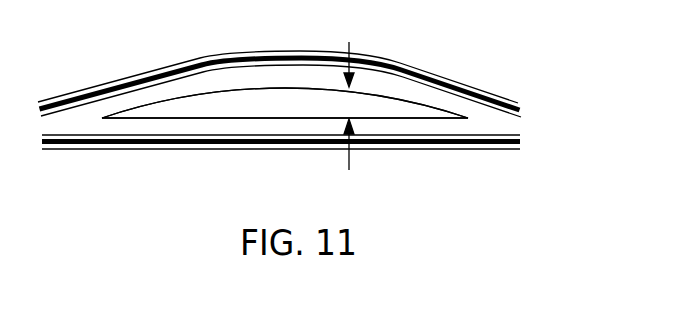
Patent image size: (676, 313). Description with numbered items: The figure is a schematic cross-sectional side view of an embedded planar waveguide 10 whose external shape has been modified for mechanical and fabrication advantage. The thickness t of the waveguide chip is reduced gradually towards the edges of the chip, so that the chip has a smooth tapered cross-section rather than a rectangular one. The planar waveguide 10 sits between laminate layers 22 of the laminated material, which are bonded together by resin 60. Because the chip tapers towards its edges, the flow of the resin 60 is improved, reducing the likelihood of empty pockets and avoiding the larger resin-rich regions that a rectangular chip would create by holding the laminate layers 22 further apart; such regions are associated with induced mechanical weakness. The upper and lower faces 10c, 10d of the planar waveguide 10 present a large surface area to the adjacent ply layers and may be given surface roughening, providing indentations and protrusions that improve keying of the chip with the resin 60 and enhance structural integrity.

The planar waveguide 10 is at (285, 111).
The lower face of the planar waveguide 10c is at (255, 120).
The upper face of the planar waveguide 10d is at (168, 94).
The laminate layers 22 is at (440, 74).
The resin 60 is at (486, 122).
The thickness of the waveguide chip t is at (350, 122).